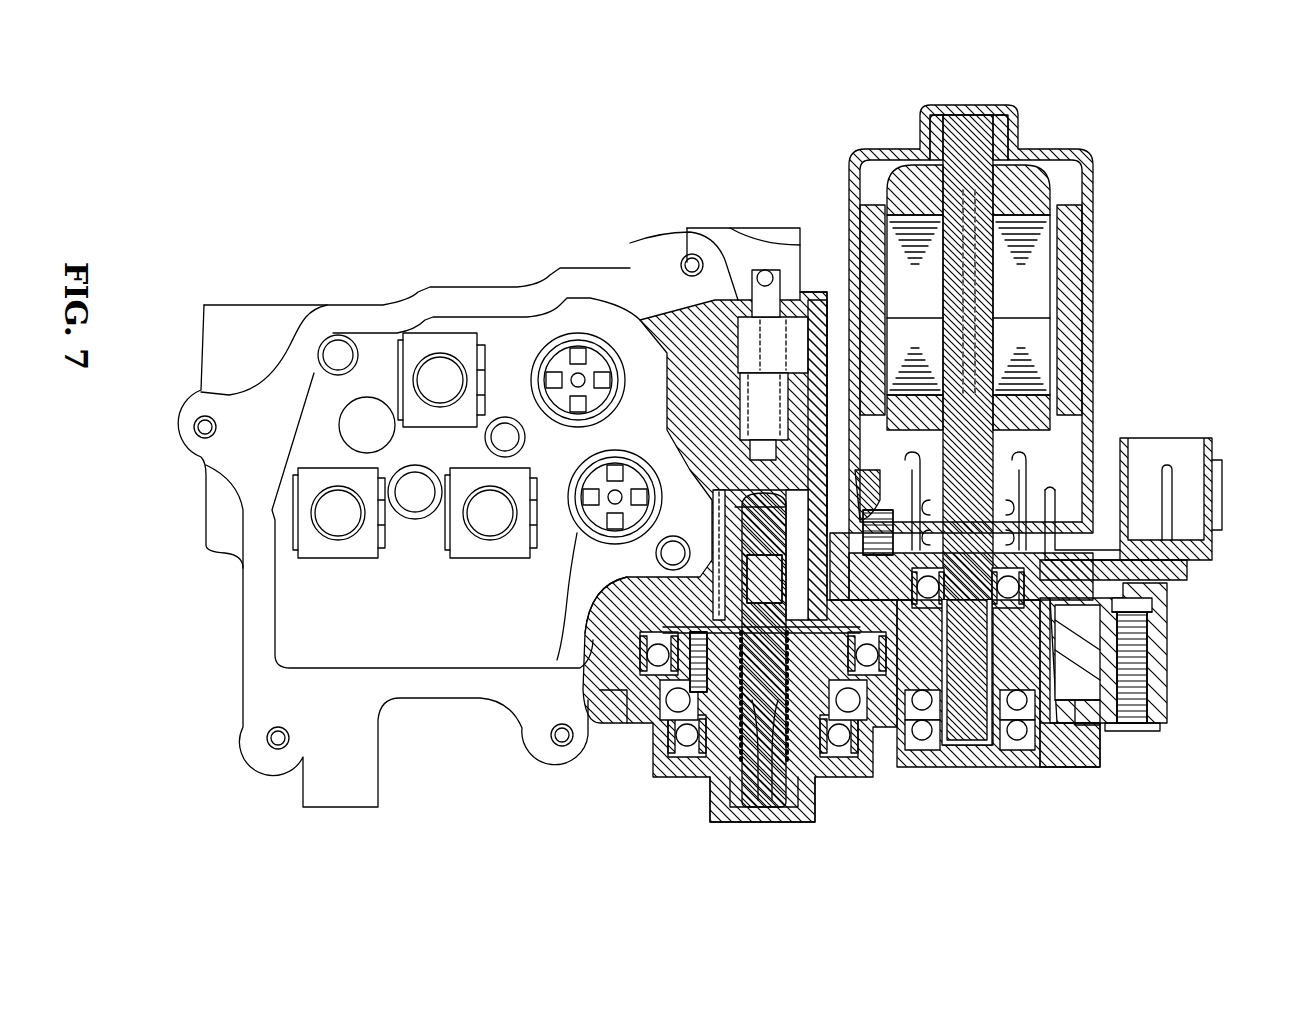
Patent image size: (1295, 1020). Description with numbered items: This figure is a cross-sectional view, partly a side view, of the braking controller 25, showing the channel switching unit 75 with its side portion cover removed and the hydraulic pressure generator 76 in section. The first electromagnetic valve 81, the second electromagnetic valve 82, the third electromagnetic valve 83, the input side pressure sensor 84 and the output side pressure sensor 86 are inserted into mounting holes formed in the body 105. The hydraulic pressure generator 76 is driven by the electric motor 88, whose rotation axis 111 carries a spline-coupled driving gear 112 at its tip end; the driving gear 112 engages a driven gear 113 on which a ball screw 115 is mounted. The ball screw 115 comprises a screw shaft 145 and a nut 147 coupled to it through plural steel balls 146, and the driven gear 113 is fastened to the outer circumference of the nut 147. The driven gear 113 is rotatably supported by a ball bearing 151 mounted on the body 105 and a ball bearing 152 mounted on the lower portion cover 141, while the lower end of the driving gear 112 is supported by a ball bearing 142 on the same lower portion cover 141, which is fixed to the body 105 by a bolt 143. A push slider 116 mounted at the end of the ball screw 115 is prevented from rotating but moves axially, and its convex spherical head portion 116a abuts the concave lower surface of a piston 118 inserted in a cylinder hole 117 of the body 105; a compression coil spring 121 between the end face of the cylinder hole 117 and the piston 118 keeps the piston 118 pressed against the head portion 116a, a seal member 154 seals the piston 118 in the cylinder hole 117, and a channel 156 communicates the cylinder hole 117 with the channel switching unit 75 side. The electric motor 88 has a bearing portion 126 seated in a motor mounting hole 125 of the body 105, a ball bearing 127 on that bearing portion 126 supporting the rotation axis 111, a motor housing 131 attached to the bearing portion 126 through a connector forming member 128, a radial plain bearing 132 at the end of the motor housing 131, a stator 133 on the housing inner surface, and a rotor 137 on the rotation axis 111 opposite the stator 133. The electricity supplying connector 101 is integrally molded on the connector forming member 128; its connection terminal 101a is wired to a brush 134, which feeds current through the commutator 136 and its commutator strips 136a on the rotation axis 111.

The actuator unit 25 is at (335, 75).
The channel switching unit 75 is at (325, 272).
The hydraulic pressure generator 76 is at (1026, 457).
The first electromagnetic valve 81 is at (298, 513).
The second electromagnetic valve 82 is at (440, 340).
The third electromagnetic valve 83 is at (488, 552).
The input side pressure sensor 84 is at (592, 525).
The output side pressure sensor 86 is at (578, 333).
The electric motor 88 is at (1105, 293).
The electricity supplying connector 101 is at (1203, 465).
The connection terminal 101a is at (1196, 470).
The body 105 is at (308, 622).
The rotation axis 111 is at (1090, 305).
The driving gear 112 is at (1085, 745).
The driven gear 113 is at (875, 725).
The ball screw 115 is at (730, 790).
The push slider 116 is at (656, 555).
The head portion 116a is at (655, 450).
The cylinder hole 117 is at (715, 380).
The piston 118 is at (830, 300).
The compression coil spring 121 is at (712, 300).
The motor mounting hole 125 is at (1150, 652).
The bearing portion 126 is at (1152, 603).
The ball bearing 127 is at (1150, 630).
The connector forming member 128 is at (1177, 576).
The motor housing 131 is at (1060, 152).
The radial bearing 132 is at (930, 140).
The stator 133 is at (1085, 212).
The brush 134 is at (975, 745).
The commutator 136 is at (1035, 470).
The commutator strip 136a is at (1055, 490).
The rotor 137 is at (1040, 350).
The lower portion cover 141 is at (1120, 740).
The ball bearing 142 is at (1035, 760).
The bolt 143 is at (1130, 733).
The screw shaft 145 is at (765, 807).
The steel balls 146 is at (755, 787).
The nut 147 is at (808, 790).
The ball bearing 151 is at (655, 692).
The ball bearing 152 is at (650, 762).
The seal member 154 is at (662, 420).
The channel 156 is at (765, 268).